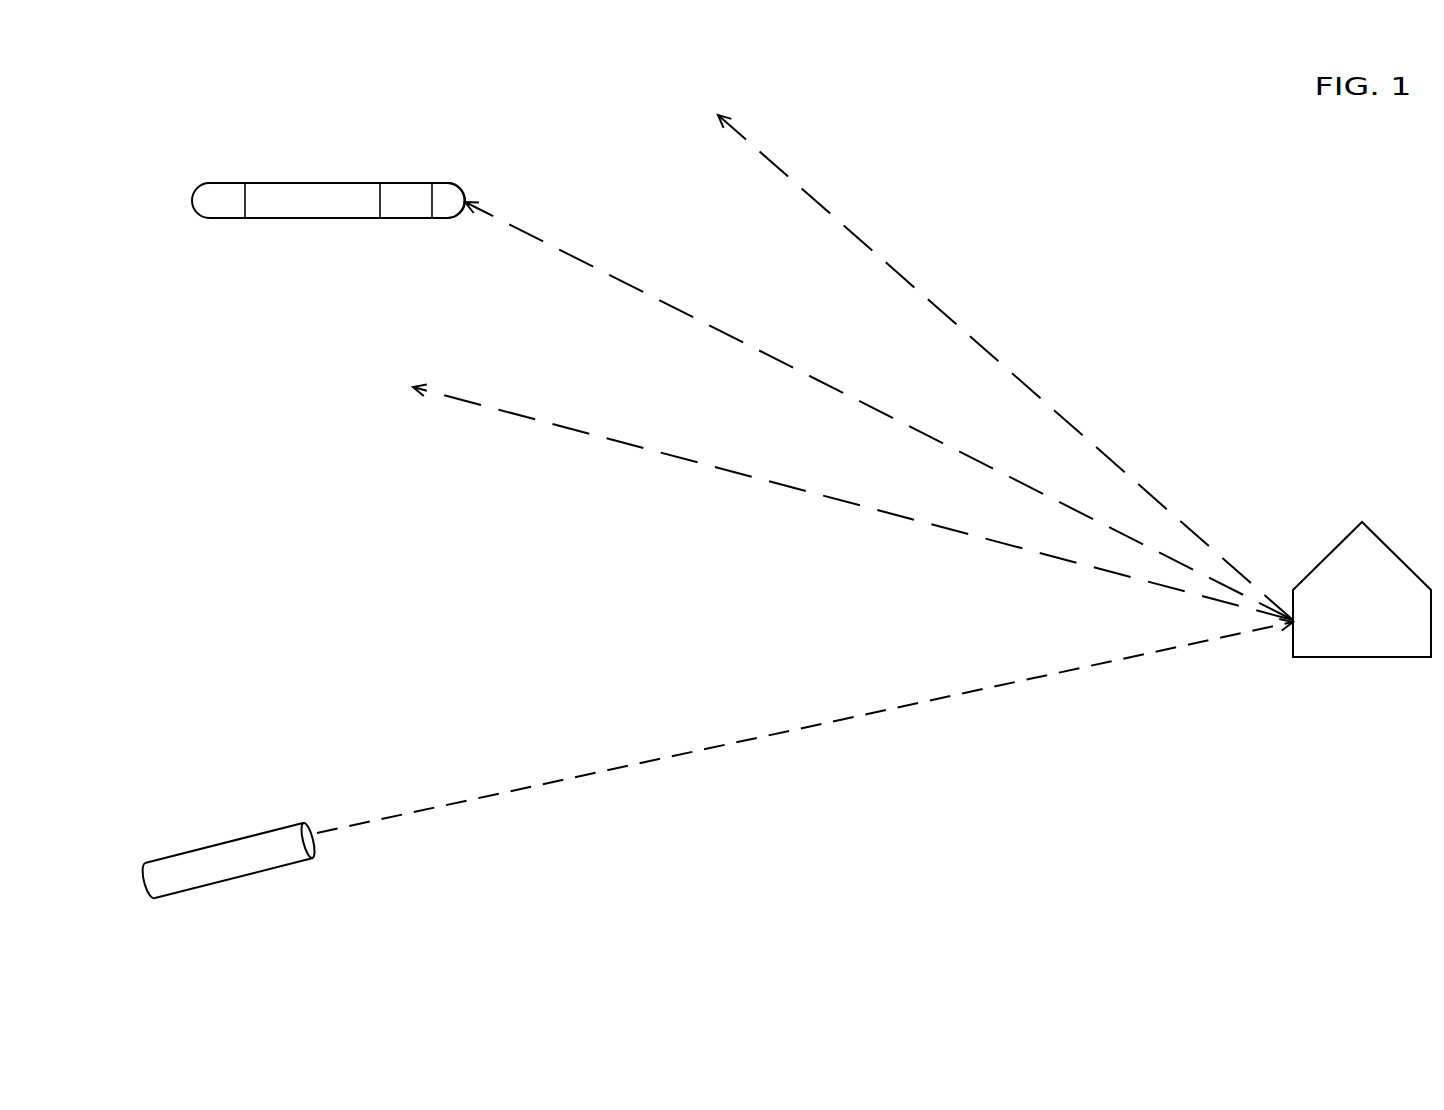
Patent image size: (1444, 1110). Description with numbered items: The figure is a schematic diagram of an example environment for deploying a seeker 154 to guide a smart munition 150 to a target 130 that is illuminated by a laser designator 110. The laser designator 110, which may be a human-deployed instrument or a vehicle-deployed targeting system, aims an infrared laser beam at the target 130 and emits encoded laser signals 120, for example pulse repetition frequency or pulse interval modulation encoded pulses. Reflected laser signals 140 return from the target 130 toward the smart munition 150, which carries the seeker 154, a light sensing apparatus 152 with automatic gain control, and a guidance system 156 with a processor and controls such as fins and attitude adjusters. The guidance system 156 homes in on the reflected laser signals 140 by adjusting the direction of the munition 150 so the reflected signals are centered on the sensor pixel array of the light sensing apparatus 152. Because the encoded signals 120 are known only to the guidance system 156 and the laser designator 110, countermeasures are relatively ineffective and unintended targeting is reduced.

The laser designator 110 is at (240, 878).
The encoded laser signals 120 is at (845, 722).
The target 130 is at (1386, 638).
The reflected laser signals 140 is at (737, 475).
The smart munition 150 is at (363, 185).
The light sensing apparatus 152 is at (510, 146).
The seeker 154 is at (405, 194).
The guidance system 156 is at (218, 203).